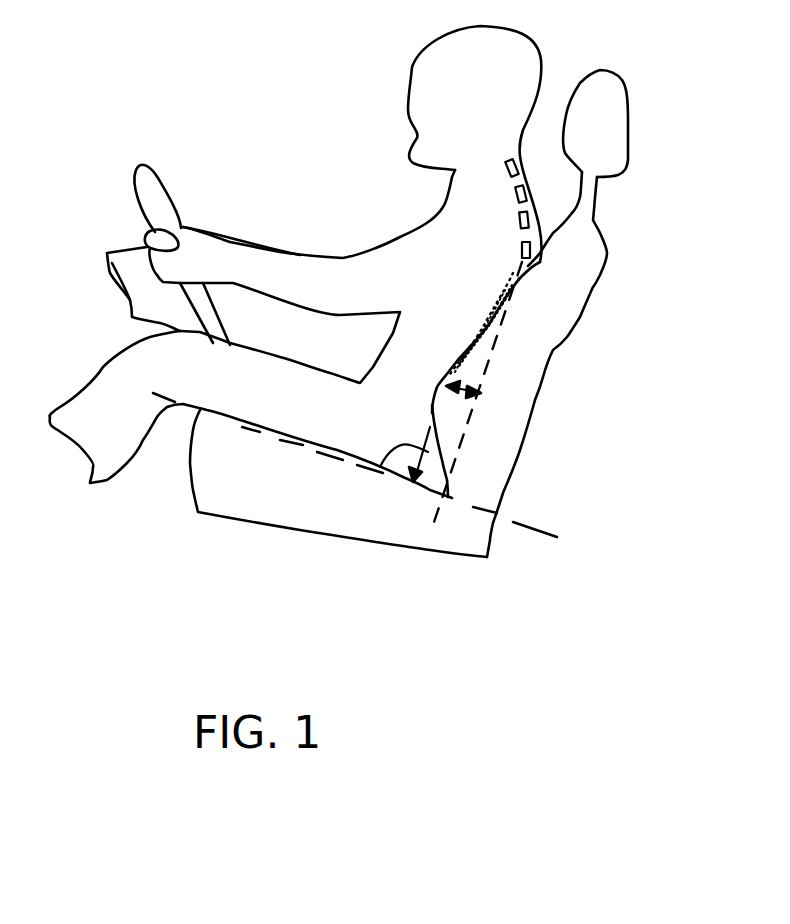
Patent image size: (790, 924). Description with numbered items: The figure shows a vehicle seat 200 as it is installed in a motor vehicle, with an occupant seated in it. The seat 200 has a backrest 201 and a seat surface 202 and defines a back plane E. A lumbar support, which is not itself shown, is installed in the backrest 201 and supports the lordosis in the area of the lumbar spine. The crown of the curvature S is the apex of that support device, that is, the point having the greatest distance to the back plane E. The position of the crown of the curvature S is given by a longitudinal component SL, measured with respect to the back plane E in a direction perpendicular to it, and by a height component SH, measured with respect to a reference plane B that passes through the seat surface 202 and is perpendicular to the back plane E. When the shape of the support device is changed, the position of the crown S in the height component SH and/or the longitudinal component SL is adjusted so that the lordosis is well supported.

The seat 200 is at (424, 329).
The backrest 201 is at (540, 287).
The seat surface 202 is at (313, 450).
The back plane E is at (513, 315).
The crown of the curvature S is at (455, 365).
The longitudinal component SL is at (480, 377).
The height component SH is at (428, 452).
The reference plane B is at (533, 540).